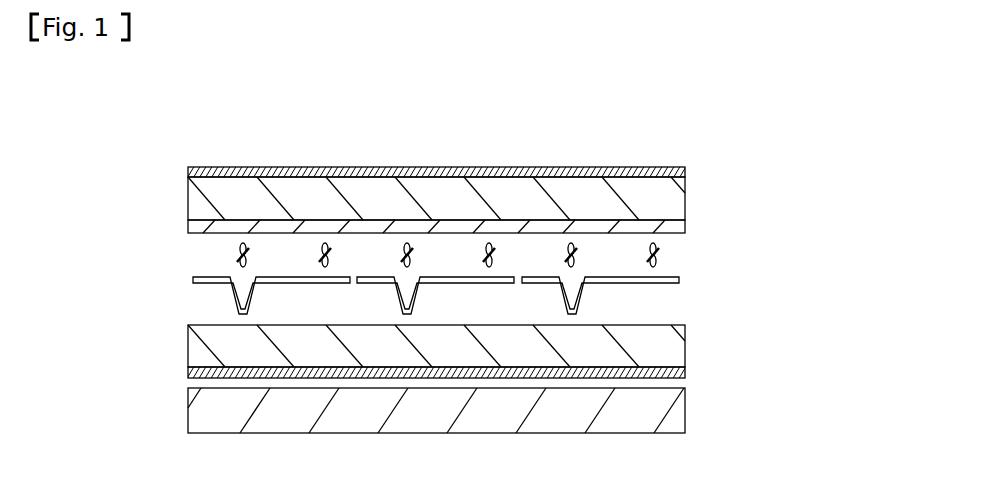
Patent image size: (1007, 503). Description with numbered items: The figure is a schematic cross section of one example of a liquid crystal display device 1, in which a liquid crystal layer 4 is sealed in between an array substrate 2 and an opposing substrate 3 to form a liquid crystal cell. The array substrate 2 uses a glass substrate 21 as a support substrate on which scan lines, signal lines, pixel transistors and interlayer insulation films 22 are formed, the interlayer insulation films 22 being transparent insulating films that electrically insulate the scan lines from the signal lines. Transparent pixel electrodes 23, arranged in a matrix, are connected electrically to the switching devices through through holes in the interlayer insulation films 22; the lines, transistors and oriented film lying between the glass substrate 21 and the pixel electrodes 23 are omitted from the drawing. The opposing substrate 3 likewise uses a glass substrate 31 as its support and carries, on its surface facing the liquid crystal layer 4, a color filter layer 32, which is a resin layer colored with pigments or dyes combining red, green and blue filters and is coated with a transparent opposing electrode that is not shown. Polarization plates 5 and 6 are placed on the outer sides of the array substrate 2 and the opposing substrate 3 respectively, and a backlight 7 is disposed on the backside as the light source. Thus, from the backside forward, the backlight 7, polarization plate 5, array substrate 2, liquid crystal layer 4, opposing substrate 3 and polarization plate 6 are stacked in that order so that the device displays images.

The liquid crystal display device 1 is at (857, 155).
The array substrate 2 is at (772, 255).
The opposing substrate 3 is at (775, 177).
The liquid crystal layer 4 is at (207, 262).
The polarization plate 5 is at (190, 372).
The polarization plate 6 is at (190, 173).
The backlight 7 is at (677, 412).
The glass substrate 21 is at (677, 347).
The interlayer insulation films 22 is at (670, 303).
The pixel electrodes 23 is at (679, 279).
The glass substrate 31 is at (685, 194).
The color filter layer 32 is at (685, 228).